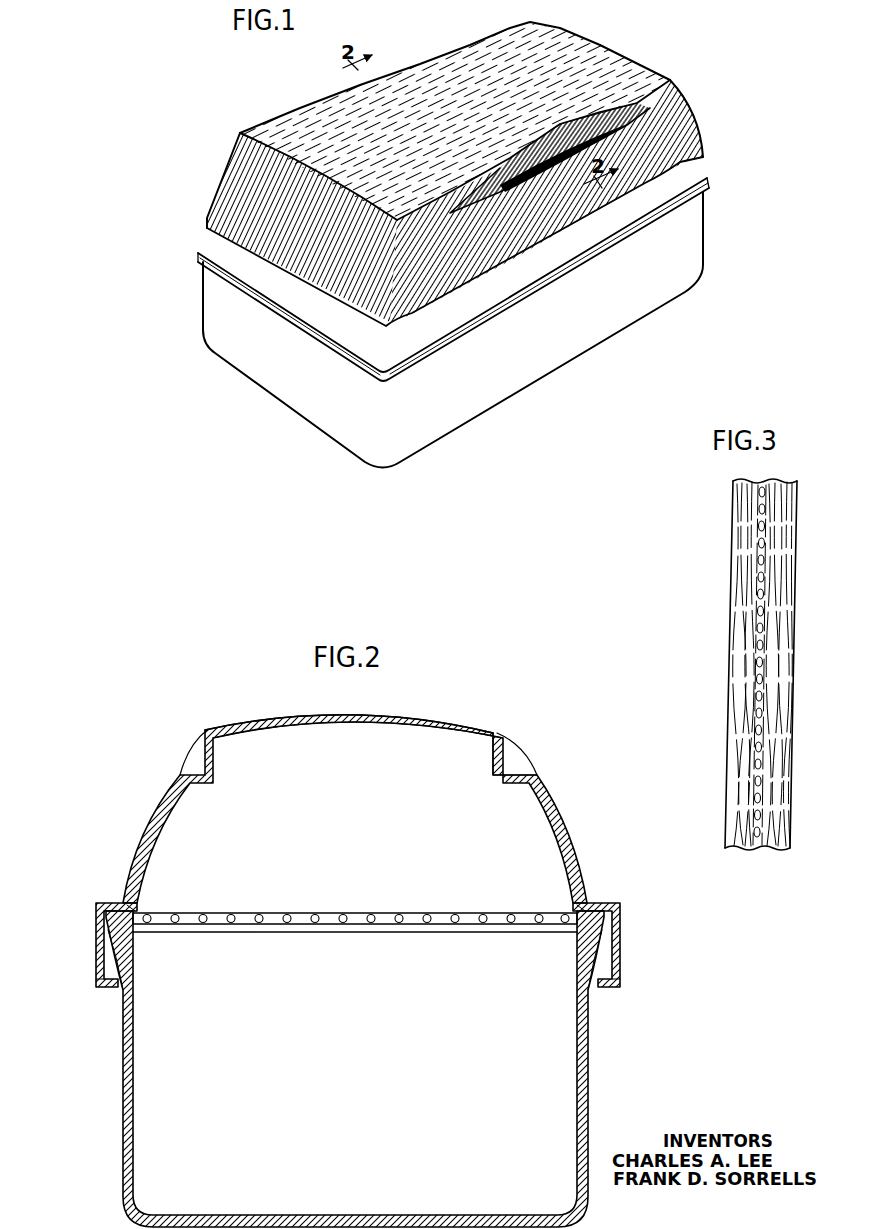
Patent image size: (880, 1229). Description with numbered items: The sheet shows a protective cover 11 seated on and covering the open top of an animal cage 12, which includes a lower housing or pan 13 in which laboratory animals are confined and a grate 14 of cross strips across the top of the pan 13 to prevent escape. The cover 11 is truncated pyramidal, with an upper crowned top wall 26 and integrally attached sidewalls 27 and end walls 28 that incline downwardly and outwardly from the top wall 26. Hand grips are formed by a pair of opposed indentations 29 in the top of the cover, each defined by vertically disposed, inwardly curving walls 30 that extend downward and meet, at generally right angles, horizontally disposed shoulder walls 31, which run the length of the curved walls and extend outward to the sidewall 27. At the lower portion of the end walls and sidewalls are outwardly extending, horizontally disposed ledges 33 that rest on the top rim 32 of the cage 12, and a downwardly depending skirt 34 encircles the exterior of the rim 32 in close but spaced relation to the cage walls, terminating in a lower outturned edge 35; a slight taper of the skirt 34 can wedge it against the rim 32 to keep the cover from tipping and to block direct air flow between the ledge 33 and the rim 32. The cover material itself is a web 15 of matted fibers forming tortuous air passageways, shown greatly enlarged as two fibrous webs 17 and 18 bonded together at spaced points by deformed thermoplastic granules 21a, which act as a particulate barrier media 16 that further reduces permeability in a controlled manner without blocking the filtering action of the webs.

In FIG. 1, the protective cover 11 is at (438, 190).
In FIG. 2, the protective cover 11 is at (362, 831).
In FIG. 1, the cage 12 is at (486, 323).
In FIG. 2, the cage 12 is at (415, 1040).
In FIG. 1, the lower housing or pan 13 is at (521, 381).
In FIG. 2, the lower housing or pan 13 is at (358, 1052).
In FIG. 2, the grate 14 is at (327, 906).
In FIG. 3, the web of fibers 15 is at (744, 643).
In FIG. 3, the particulate barrier media 16 is at (771, 476).
In FIG. 3, the fibrous web 17 is at (741, 500).
In FIG. 3, the fibrous web 18 is at (788, 508).
In FIG. 3, the deformed thermoplastic granules 21a is at (758, 565).
In FIG. 1, the crowned top wall 26 is at (273, 132).
In FIG. 2, the crowned top wall 26 is at (397, 727).
In FIG. 1, the sidewalls 27 is at (452, 265).
In FIG. 2, the sidewalls 27 is at (158, 805).
In FIG. 1, the end walls 28 is at (257, 197).
In FIG. 2, the end walls 28 is at (358, 790).
In FIG. 1, the indentations 29 is at (338, 103).
In FIG. 2, the indentations 29 is at (189, 738).
In FIG. 1, the inwardly curving walls 30 is at (490, 170).
In FIG. 2, the inwardly curving walls 30 is at (504, 738).
In FIG. 1, the shoulder walls 31 is at (628, 124).
In FIG. 2, the shoulder walls 31 is at (529, 770).
In FIG. 2, the top rim 32 is at (138, 908).
In FIG. 1, the ledges 33 is at (262, 251).
In FIG. 2, the ledges 33 is at (108, 904).
In FIG. 1, the skirt 34 is at (527, 274).
In FIG. 2, the skirt 34 is at (622, 942).
In FIG. 1, the outturned edge 35 is at (423, 358).
In FIG. 2, the outturned edge 35 is at (86, 986).